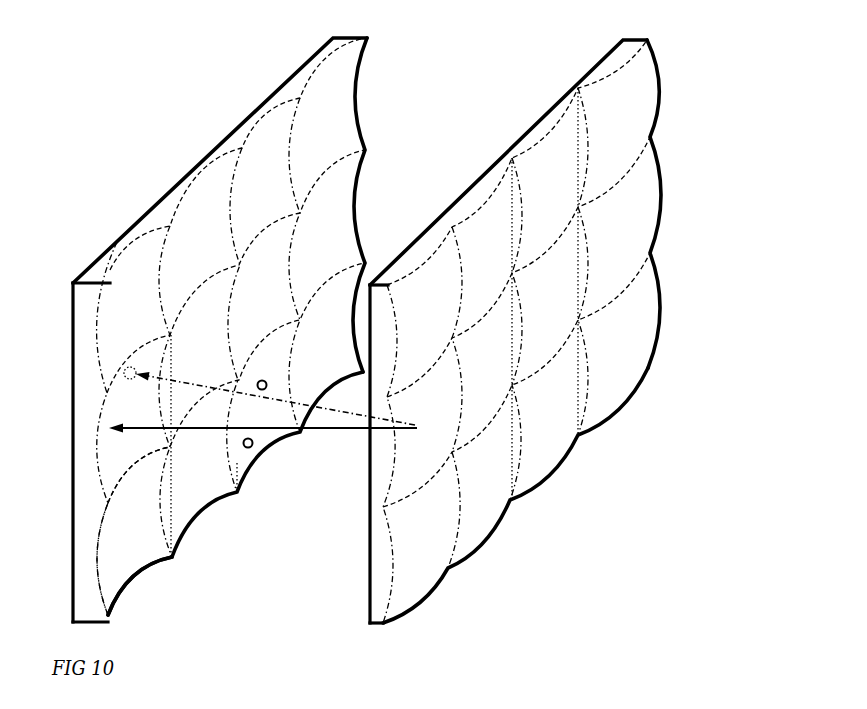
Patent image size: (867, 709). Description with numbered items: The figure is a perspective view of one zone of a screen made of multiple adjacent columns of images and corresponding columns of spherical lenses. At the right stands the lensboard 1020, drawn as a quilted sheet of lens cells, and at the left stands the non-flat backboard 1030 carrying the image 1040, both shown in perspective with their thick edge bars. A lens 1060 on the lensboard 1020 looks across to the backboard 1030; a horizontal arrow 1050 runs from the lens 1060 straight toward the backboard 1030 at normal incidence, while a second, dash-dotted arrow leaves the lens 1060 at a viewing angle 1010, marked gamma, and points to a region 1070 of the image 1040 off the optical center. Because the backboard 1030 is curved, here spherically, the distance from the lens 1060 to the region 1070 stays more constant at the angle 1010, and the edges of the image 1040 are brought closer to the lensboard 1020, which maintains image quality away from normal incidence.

The viewing angle 1010 is at (220, 326).
The lensboard 1020 is at (514, 344).
The backboard 1030 is at (89, 465).
The image 1040 is at (140, 531).
The reference direction arrow 1050 is at (258, 442).
The lens 1060 is at (423, 443).
The region of image 1070 is at (263, 383).